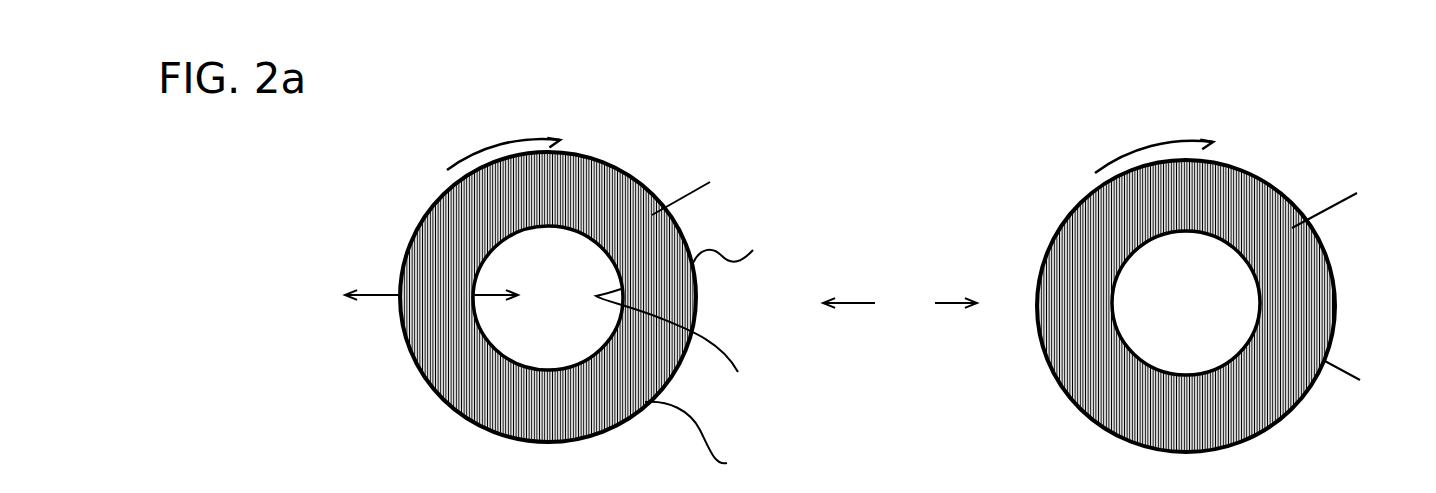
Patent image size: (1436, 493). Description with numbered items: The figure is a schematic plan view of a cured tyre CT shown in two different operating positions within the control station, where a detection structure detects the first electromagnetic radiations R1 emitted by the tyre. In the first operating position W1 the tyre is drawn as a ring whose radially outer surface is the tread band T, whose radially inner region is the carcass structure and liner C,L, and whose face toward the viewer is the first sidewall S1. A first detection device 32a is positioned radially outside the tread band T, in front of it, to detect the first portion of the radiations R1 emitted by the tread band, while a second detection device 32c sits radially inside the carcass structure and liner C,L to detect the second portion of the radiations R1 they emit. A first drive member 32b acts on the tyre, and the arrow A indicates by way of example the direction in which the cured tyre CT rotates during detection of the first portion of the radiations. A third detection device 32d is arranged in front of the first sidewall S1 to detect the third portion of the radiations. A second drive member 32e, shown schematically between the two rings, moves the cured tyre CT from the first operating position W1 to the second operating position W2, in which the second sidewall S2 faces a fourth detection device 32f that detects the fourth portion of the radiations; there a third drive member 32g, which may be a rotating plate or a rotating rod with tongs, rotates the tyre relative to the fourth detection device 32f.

The first detection device 32a is at (341, 287).
The first drive member 32b is at (440, 193).
The second detection device 32c is at (528, 292).
The third detection device 32d is at (608, 364).
The second drive member 32e is at (900, 301).
The fourth detection device 32f is at (1249, 375).
The third drive member 32g is at (1090, 190).
The cured tyre CT is at (1022, 193).
The tread band T is at (732, 252).
The carcass structure and liner C,L is at (677, 347).
The first sidewall S1 is at (702, 441).
The second sidewall S2 is at (1357, 380).
The first electromagnetic radiations R1 is at (440, 316).
The direction of rotation A is at (506, 135).
The first operating position W1 is at (384, 421).
The second operating position W2 is at (1046, 447).